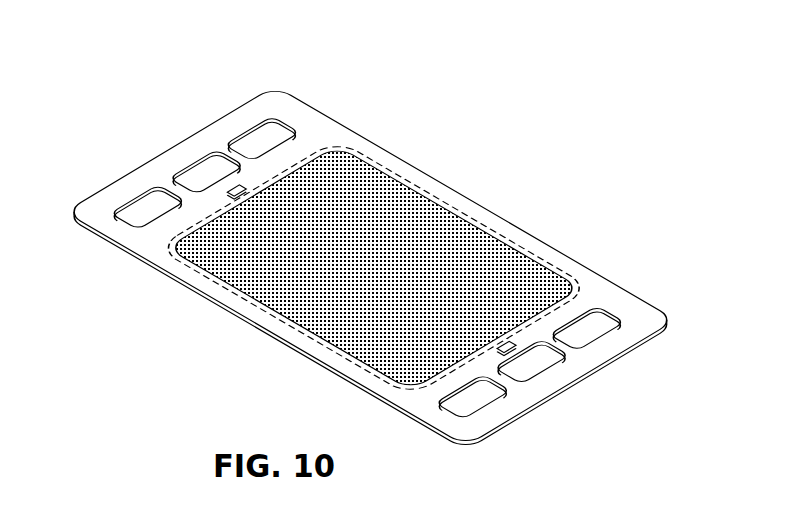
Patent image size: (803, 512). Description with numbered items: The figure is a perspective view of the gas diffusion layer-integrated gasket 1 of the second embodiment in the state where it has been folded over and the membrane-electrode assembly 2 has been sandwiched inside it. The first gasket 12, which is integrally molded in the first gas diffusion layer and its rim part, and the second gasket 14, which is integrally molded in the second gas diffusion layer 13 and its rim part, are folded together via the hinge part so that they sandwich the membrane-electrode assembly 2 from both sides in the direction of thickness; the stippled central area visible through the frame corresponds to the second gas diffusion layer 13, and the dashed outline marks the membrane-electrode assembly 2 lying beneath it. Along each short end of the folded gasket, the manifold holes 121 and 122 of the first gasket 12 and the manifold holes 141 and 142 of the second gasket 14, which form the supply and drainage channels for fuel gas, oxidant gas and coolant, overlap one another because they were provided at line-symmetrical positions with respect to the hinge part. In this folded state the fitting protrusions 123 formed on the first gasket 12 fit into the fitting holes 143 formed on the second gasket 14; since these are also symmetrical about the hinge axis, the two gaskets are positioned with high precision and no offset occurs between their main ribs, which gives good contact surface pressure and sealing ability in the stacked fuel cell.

The gas diffusion layer-integrated gasket 1 is at (370, 240).
The membrane-electrode assembly 2 is at (372, 151).
The first gasket 12 is at (177, 290).
The second gas diffusion layer 13 is at (418, 235).
The second gasket 14 is at (298, 117).
The manifold holes 121 is at (148, 208).
The manifold holes 141 is at (207, 181).
The manifold holes 122 is at (478, 398).
The manifold holes 142 is at (528, 370).
The fitting holes 143 is at (237, 186).
The fitting protrusions 123 is at (510, 340).